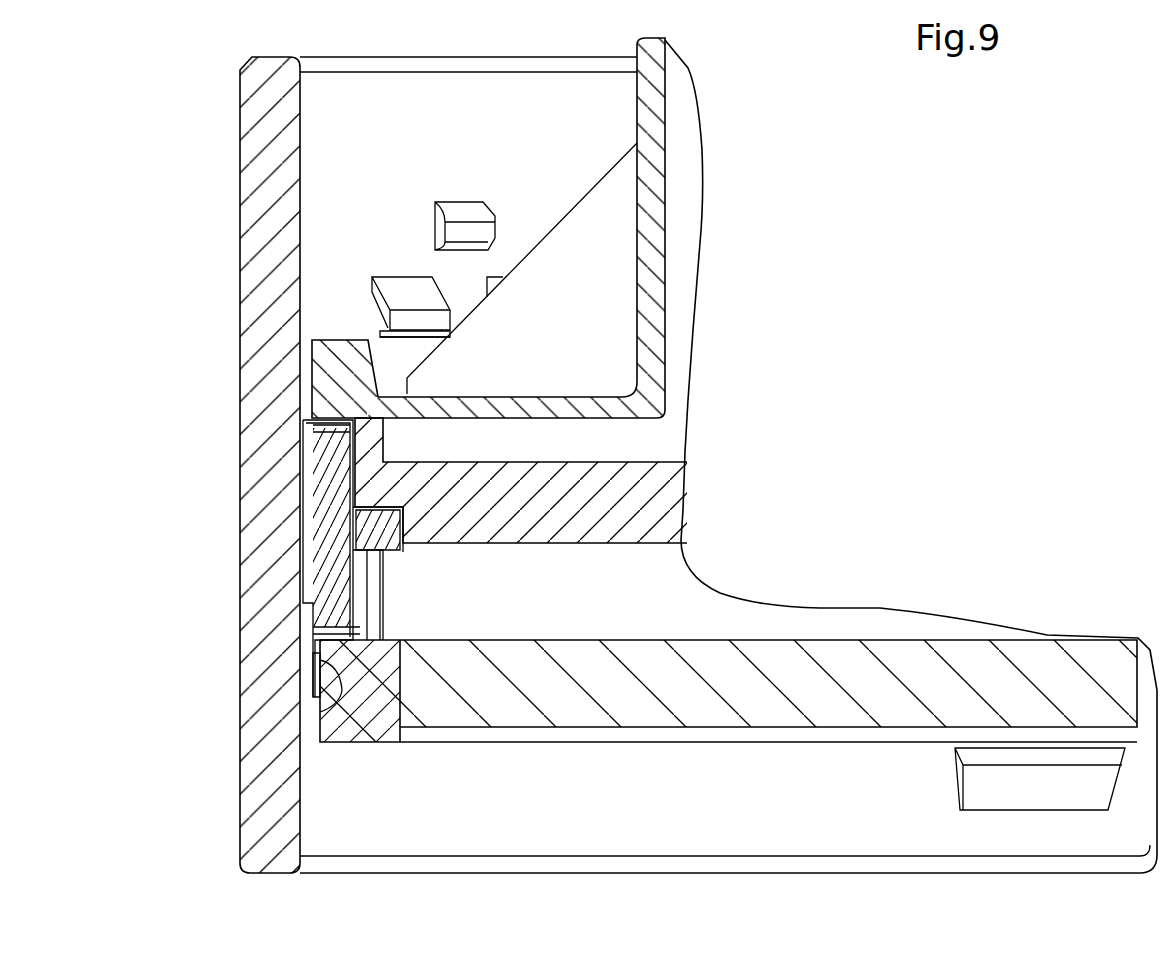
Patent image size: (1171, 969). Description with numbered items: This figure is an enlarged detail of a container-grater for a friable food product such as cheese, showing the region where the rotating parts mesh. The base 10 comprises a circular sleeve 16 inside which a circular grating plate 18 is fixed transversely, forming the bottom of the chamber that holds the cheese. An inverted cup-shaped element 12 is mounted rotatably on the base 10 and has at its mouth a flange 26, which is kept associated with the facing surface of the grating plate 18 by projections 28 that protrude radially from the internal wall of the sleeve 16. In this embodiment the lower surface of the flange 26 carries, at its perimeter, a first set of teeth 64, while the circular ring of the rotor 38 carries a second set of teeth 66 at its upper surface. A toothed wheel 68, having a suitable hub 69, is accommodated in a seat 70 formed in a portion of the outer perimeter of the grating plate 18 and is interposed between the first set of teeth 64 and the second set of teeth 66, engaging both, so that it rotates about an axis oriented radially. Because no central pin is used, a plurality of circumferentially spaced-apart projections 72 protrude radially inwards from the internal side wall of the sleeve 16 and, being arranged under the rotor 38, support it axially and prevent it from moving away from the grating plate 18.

The base 10 is at (243, 263).
The inverted cup-shaped element 12 is at (645, 36).
The circular sleeve 16 is at (260, 403).
The grating plate 18 is at (680, 527).
The flange 26 is at (383, 403).
The projections 28 is at (418, 287).
The rotor 38 is at (642, 714).
The first set of teeth 64 is at (330, 418).
The second set of teeth 66 is at (335, 688).
The toothed wheel 68 is at (310, 578).
The hub 69 is at (385, 548).
The seat 70 is at (368, 507).
The projections 72 is at (987, 793).